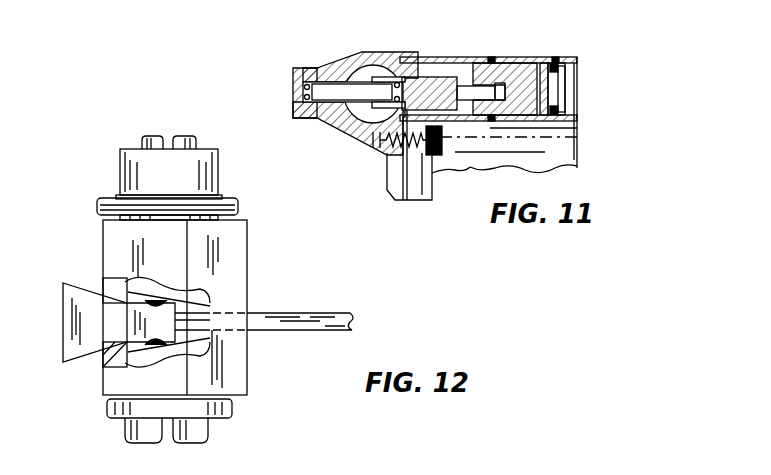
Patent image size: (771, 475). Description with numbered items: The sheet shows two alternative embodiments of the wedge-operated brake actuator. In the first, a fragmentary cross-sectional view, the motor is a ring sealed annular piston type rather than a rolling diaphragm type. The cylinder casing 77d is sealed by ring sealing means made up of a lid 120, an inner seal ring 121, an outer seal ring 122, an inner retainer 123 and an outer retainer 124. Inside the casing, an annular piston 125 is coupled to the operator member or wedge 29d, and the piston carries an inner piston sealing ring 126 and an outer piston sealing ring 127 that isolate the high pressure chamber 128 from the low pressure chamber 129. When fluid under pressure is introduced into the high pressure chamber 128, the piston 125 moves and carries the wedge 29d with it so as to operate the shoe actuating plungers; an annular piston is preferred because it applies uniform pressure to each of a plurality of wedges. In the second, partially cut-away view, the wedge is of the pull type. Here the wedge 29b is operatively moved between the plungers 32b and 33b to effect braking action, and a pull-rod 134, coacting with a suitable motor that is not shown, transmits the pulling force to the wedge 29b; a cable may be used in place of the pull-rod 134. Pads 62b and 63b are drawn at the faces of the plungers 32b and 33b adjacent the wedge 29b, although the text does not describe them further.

In FIG. 11, the low pressure chamber 129 is at (427, 62).
In FIG. 11, the wedge 29d is at (438, 70).
In FIG. 11, the cylinder casing 77d is at (462, 58).
In FIG. 11, the outer piston sealing ring 127 is at (492, 60).
In FIG. 11, the annular piston 125 is at (511, 62).
In FIG. 11, the lid 120 is at (549, 63).
In FIG. 11, the outer seal ring 122 is at (565, 58).
In FIG. 11, the outer retainer 124 is at (578, 66).
In FIG. 11, the inner retainer 123 is at (565, 110).
In FIG. 11, the inner seal ring 121 is at (560, 125).
In FIG. 11, the inner piston sealing ring 126 is at (497, 121).
In FIG. 11, the high pressure chamber 128 is at (551, 121).
In FIG. 12, the wedge 29b is at (83, 347).
In FIG. 12, the plunger 32b is at (108, 280).
In FIG. 12, the upper pad 62b is at (152, 300).
In FIG. 12, the plunger 33b is at (118, 365).
In FIG. 12, the lower pad 63b is at (148, 346).
In FIG. 12, the pull-rod 134 is at (258, 312).